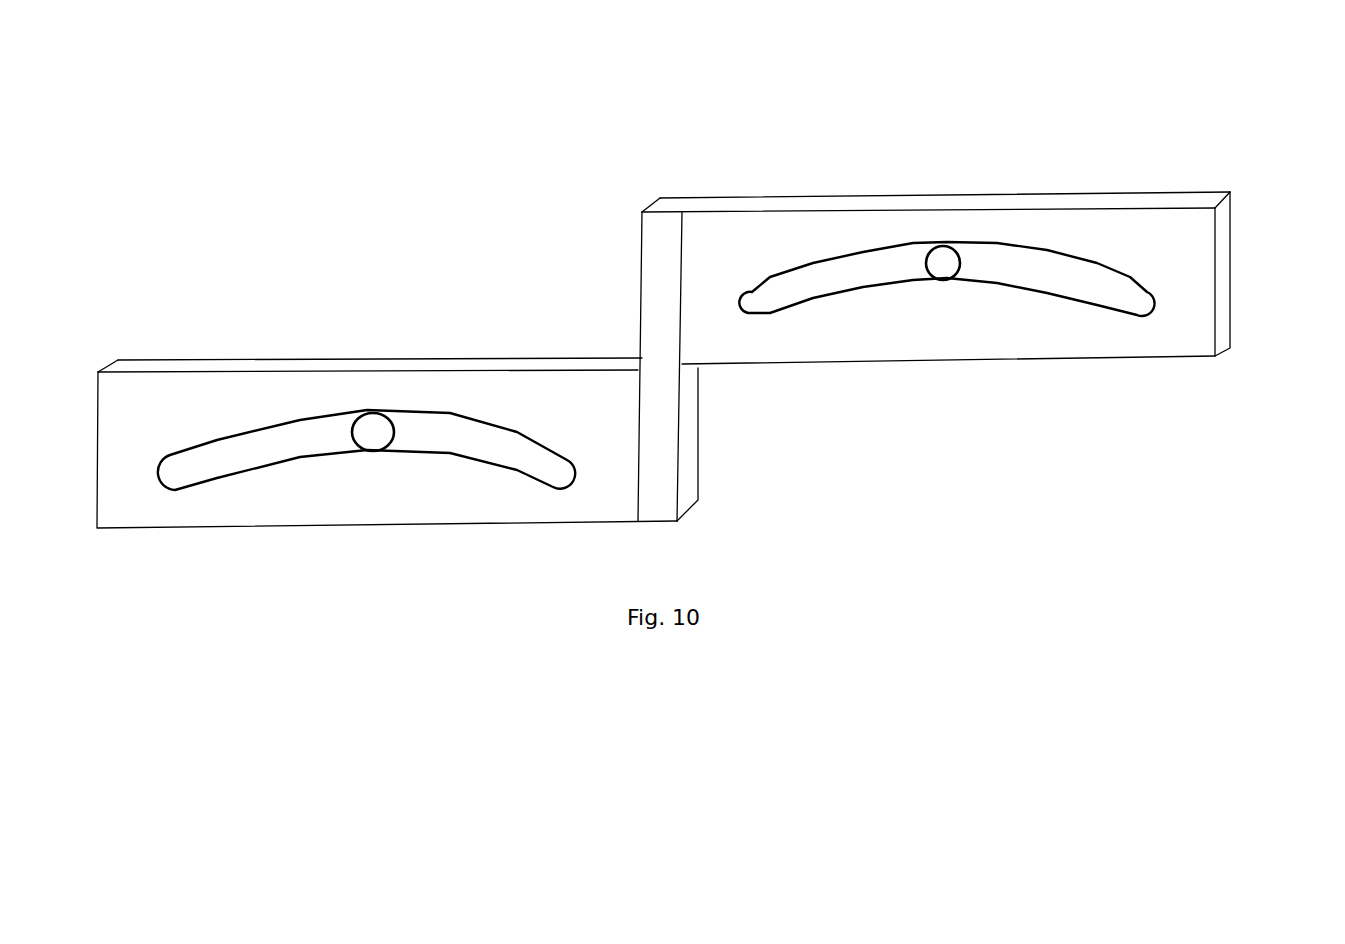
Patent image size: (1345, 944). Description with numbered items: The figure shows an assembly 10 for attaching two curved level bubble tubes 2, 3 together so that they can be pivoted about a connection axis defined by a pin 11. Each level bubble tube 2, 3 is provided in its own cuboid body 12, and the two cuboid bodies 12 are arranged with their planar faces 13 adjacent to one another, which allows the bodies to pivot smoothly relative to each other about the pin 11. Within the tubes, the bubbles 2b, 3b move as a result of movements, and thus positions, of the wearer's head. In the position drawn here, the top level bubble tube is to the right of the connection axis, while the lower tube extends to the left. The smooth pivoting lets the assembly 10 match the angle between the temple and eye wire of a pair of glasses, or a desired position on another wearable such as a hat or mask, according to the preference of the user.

The assembly 10 is at (1288, 96).
The pin 11 is at (676, 200).
The cuboid body 12 is at (408, 563).
The planar face 13 is at (1100, 402).
The level bubble tube 2 is at (1052, 255).
The bubble 2b is at (946, 247).
The level bubble tube 3 is at (470, 420).
The bubble 3b is at (370, 413).